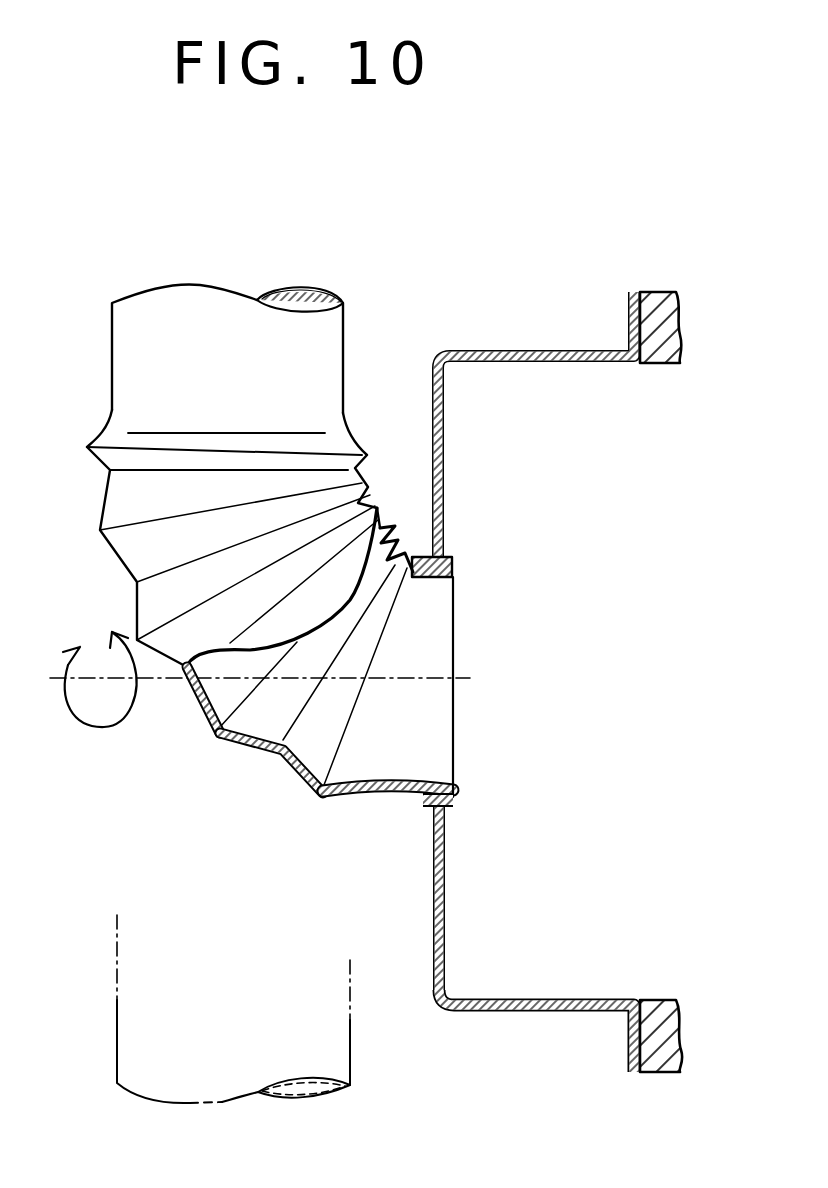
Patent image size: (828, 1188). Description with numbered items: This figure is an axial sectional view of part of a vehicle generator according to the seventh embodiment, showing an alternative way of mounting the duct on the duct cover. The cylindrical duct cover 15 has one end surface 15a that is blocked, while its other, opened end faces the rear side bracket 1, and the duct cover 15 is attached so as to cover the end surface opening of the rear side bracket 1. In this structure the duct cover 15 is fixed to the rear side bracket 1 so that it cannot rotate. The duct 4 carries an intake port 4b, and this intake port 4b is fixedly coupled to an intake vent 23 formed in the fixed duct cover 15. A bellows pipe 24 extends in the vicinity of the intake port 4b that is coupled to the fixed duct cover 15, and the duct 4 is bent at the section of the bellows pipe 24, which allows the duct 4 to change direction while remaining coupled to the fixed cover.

The rear side bracket 1 is at (681, 328).
The duct 4 is at (120, 330).
The intake port 4b is at (383, 797).
The duct cover 15 is at (560, 1012).
The end surface 15a is at (432, 940).
The intake vent 23 is at (415, 725).
The bellows pipe 24 is at (215, 740).